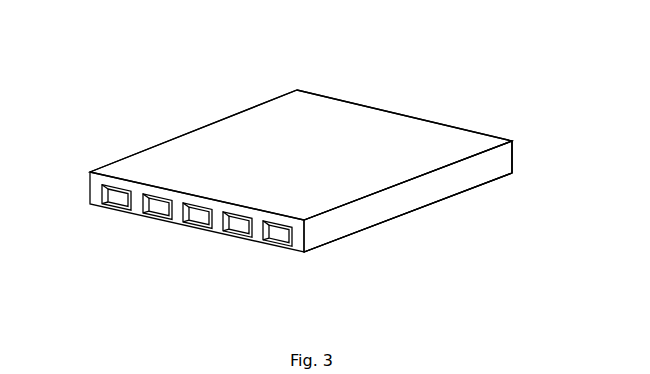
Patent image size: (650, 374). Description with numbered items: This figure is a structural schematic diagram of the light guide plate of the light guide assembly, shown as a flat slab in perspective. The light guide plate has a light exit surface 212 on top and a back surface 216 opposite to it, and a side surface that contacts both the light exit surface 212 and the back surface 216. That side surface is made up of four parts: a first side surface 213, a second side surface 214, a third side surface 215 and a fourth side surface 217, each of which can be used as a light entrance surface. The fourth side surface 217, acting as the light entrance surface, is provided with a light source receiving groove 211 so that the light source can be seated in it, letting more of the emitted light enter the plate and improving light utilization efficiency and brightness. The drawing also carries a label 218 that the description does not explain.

The light source receiving groove 211 is at (86, 182).
The light exit surface 212 is at (263, 157).
The first side surface 213 is at (167, 141).
The second side surface 214 is at (375, 107).
The third side surface 215 is at (458, 177).
The back surface 216 is at (367, 227).
The fourth side surface 217 is at (295, 232).
The end edge 218 is at (513, 156).